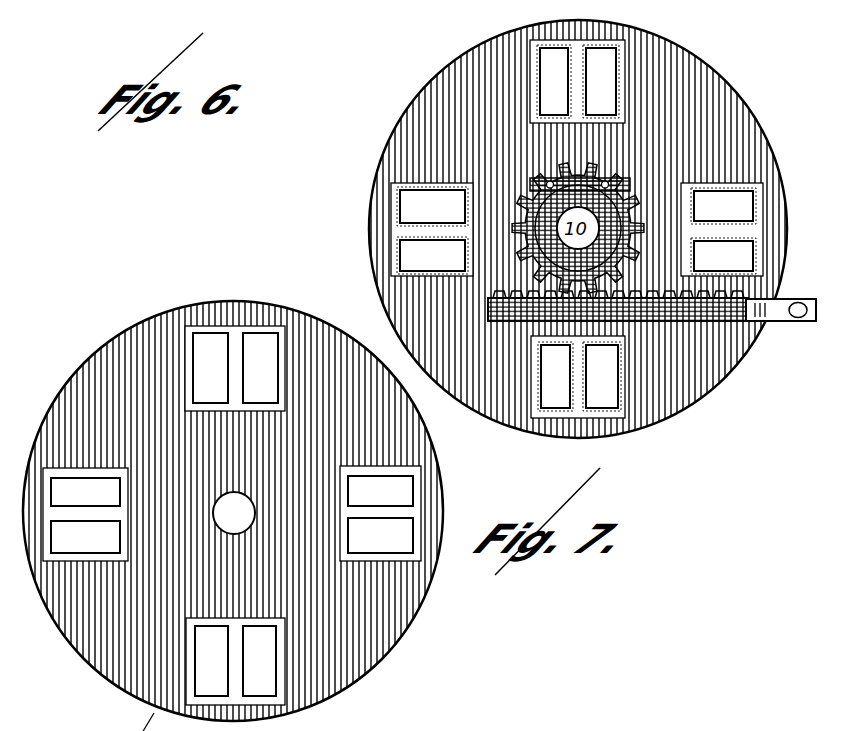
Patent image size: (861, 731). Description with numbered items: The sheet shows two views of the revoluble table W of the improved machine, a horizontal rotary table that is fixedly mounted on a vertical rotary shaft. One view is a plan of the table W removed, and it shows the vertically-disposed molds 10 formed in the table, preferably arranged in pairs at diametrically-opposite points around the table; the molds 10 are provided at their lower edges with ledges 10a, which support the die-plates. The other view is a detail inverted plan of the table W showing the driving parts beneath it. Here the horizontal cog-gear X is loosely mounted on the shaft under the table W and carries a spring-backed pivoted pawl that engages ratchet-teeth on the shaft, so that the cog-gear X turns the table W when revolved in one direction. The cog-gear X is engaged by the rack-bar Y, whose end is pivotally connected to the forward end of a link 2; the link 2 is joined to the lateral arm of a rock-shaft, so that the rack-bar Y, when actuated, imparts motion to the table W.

In FIG. 6, the revoluble table W is at (192, 437).
In FIG. 7, the revoluble table W is at (680, 106).
In FIG. 6, the molds 10 is at (85, 514).
In FIG. 7, the molds 10 is at (722, 229).
In FIG. 6, the ledges 10a is at (244, 513).
In FIG. 7, the cog-gear X is at (612, 177).
In FIG. 7, the rack-bar Y is at (712, 306).
In FIG. 7, the link 2 is at (786, 294).